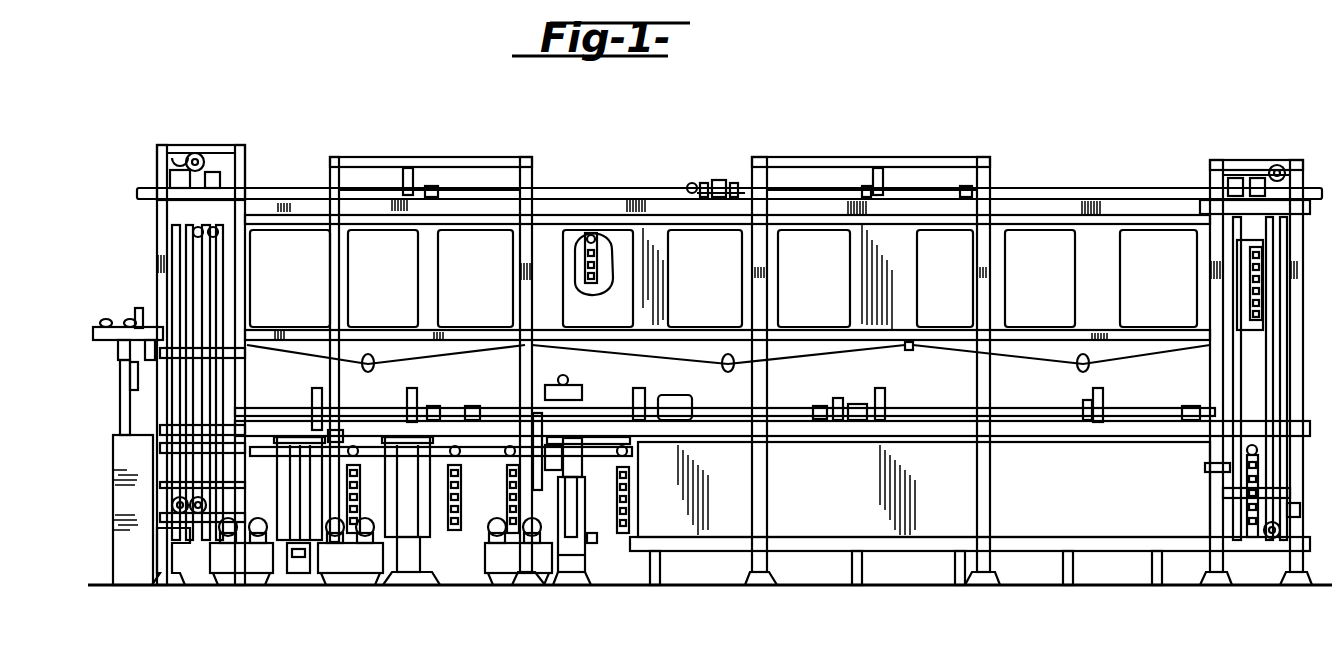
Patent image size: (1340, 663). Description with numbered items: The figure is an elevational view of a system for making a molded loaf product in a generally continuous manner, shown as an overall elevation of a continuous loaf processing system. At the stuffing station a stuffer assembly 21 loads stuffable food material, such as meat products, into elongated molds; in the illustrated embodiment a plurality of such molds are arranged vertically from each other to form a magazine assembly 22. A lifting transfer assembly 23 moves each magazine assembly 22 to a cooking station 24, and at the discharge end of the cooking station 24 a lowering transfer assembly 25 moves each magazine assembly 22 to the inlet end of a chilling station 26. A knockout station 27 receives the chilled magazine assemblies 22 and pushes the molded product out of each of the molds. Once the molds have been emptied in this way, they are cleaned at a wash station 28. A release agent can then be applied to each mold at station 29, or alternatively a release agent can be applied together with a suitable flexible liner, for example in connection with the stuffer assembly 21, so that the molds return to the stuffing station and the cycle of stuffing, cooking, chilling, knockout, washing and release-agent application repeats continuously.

The stuffer assembly 21 is at (110, 468).
The magazine assembly 22 is at (596, 248).
The lifting transfer assembly 23 is at (148, 255).
The cooking station 24 is at (737, 158).
The lowering transfer assembly 25 is at (1275, 158).
The chilling station 26 is at (958, 490).
The knockout station 27 is at (575, 590).
The wash station 28 is at (406, 590).
The release agent station 29 is at (299, 560).